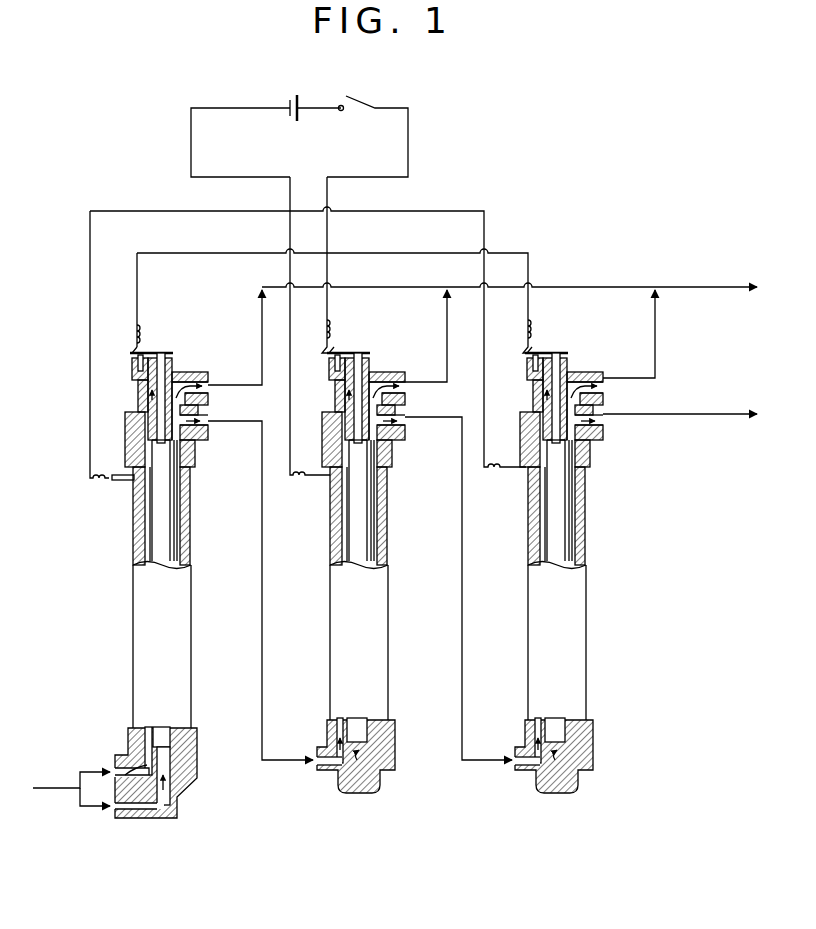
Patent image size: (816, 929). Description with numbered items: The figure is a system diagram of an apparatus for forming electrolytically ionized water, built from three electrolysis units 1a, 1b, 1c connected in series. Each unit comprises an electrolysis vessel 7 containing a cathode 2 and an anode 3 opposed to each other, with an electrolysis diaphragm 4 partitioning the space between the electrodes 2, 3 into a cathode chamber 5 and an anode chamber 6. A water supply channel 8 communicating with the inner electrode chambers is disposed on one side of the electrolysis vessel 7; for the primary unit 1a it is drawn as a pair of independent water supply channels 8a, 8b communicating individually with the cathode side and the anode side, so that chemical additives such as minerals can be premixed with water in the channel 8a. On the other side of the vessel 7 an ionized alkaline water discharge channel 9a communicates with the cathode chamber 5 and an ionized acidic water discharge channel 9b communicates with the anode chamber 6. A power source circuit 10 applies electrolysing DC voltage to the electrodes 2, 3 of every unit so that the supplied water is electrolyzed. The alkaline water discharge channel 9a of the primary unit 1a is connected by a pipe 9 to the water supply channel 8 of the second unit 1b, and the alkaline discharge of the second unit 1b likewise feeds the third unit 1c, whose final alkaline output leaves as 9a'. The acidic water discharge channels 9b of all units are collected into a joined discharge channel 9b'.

The primary electrolysis unit 1a is at (129, 556).
The second electrolysis unit 1b is at (375, 583).
The third electrolysis unit 1c is at (571, 583).
The cathode 2 is at (133, 498).
The anode 3 is at (160, 515).
The electrolysis diaphragm 4 is at (147, 545).
The cathode chamber 5 is at (177, 482).
The anode chamber 6 is at (175, 509).
The electrolysis vessel 7 is at (195, 544).
The water supply channel 8 is at (115, 810).
The independent water supply channel 8a is at (107, 866).
The independent water supply channel 8b is at (129, 820).
The connecting pipe 9 is at (262, 525).
The ionized alkaline water discharge channel 9a is at (458, 588).
The gas output 9a' is at (680, 446).
The ionized acidic water discharge channel 9b is at (431, 334).
The joined discharge channel 9b' is at (703, 309).
The power source circuit 10 is at (190, 148).